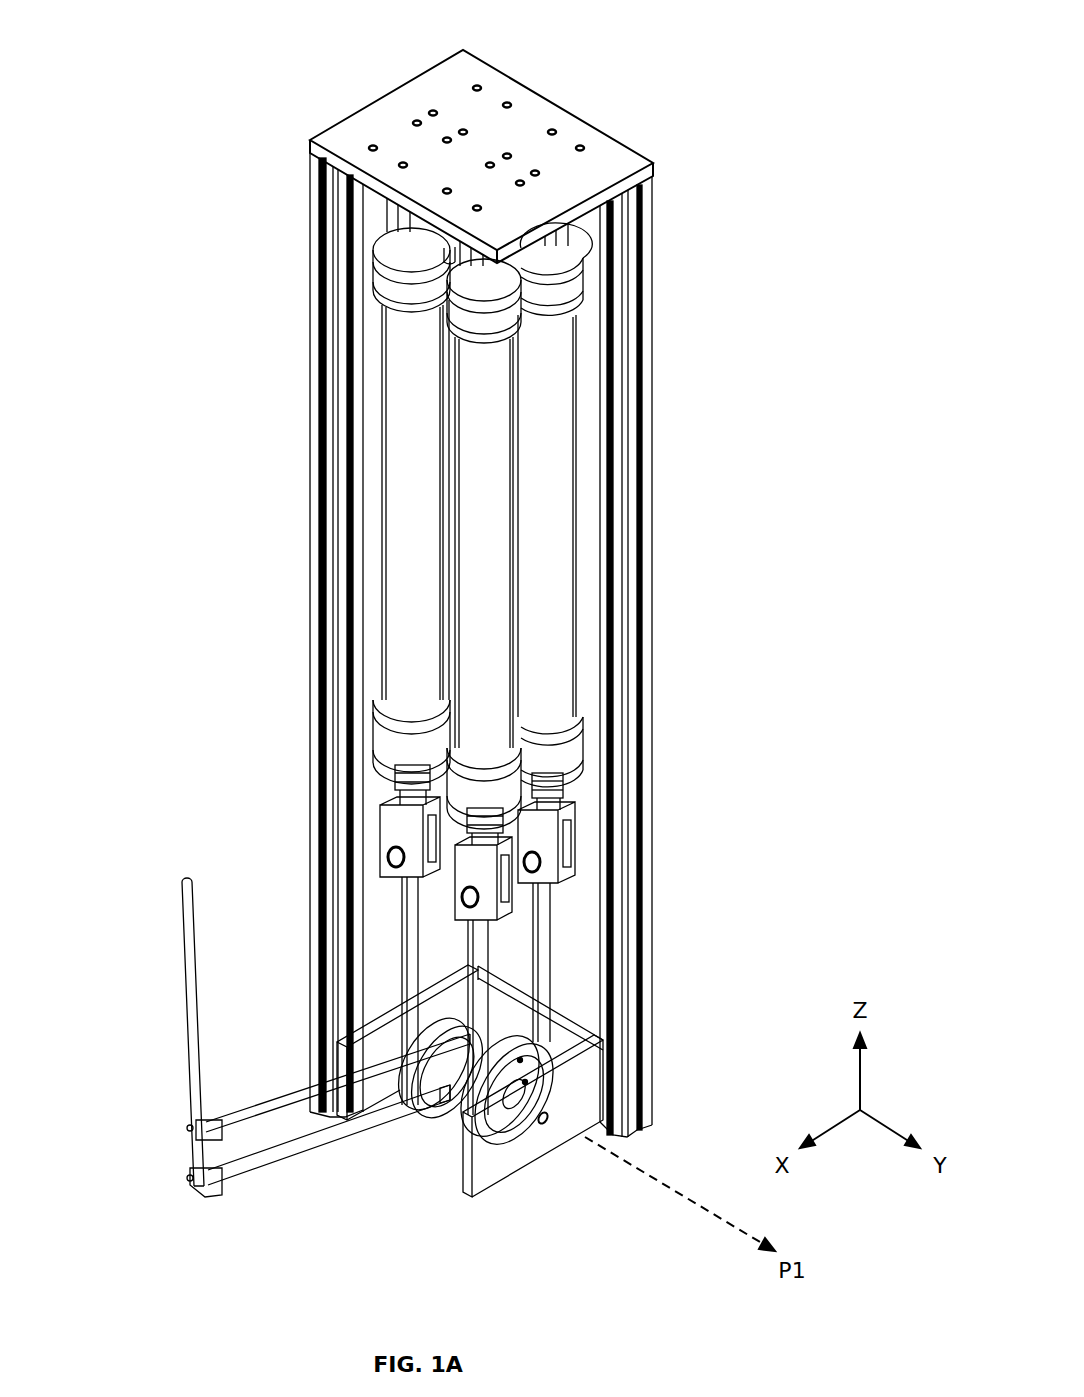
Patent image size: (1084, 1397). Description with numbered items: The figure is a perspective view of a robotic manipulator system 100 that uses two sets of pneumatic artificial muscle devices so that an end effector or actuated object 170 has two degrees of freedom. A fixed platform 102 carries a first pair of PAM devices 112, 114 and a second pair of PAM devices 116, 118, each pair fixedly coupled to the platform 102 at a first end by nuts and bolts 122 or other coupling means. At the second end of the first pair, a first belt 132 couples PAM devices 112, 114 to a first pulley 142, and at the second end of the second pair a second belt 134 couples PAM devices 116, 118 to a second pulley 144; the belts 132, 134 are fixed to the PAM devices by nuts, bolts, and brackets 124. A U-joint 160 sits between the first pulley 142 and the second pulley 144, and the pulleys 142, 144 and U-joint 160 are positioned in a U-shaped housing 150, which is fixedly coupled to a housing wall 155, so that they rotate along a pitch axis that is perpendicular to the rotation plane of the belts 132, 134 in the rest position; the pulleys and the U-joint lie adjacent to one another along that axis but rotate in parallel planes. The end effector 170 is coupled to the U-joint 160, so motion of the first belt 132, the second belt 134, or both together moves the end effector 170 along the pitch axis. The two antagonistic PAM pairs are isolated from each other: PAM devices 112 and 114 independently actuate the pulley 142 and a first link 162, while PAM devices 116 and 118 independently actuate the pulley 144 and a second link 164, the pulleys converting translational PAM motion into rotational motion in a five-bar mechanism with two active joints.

The robotic manipulator system 100 is at (328, 72).
The platform 102 is at (612, 156).
The pneumatic artificial muscle (PAM) device 112 is at (452, 400).
The pneumatic artificial muscle (PAM) device 114 is at (408, 532).
The pneumatic artificial muscle (PAM) device 116 is at (482, 585).
The pneumatic artificial muscle (PAM) device 118 is at (537, 473).
The nuts and bolts 122 is at (390, 223).
The nuts, bolts, and brackets 124 is at (390, 825).
The first belt 132 is at (400, 930).
The second belt 134 is at (543, 952).
The first pulley 142 is at (430, 1043).
The second pulley 144 is at (547, 1060).
The U-shaped housing 150 is at (495, 1153).
The housing wall 155 is at (583, 795).
The U-joint 160 is at (406, 1132).
The first link 162 is at (262, 1100).
The second link 164 is at (270, 1157).
The end effector or actuated object 170 is at (158, 1001).